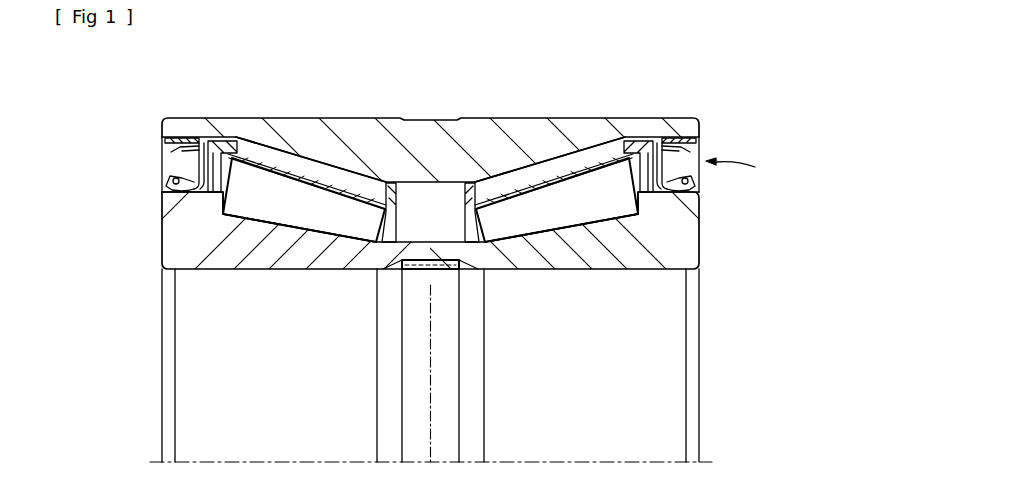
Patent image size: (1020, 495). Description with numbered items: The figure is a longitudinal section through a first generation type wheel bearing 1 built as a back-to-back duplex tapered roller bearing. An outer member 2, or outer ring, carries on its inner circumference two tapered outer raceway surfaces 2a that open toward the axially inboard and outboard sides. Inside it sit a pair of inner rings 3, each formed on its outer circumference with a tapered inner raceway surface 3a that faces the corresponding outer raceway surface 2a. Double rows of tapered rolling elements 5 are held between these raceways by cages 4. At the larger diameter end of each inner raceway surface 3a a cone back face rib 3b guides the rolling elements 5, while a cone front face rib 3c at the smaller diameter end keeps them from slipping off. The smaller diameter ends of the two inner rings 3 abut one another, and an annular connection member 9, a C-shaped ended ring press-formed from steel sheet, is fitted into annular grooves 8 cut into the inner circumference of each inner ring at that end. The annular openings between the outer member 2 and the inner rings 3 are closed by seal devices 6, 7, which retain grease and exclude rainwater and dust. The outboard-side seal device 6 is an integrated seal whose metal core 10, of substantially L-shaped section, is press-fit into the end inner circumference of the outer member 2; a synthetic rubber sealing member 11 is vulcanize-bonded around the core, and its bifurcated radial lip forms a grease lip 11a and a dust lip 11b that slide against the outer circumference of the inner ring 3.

The wheel bearing 1 is at (162, 85).
The outer member 2 is at (368, 118).
The outer raceway surface 2a is at (310, 172).
The inner ring 3 is at (165, 238).
The inner raceway surface 3a is at (283, 214).
The cone back face rib 3b is at (200, 207).
The cone front face rib 3c is at (387, 271).
The cage 4 is at (227, 140).
The rolling element 5 is at (256, 149).
The outboard-side seal device 6 is at (367, 152).
The seal device 7 is at (735, 163).
The annular groove 8 is at (381, 271).
The annular connection member 9 is at (437, 271).
The metal core 10 is at (196, 136).
The sealing member 11 is at (383, 160).
The grease lip 11a is at (190, 140).
The dust lip 11b is at (403, 179).